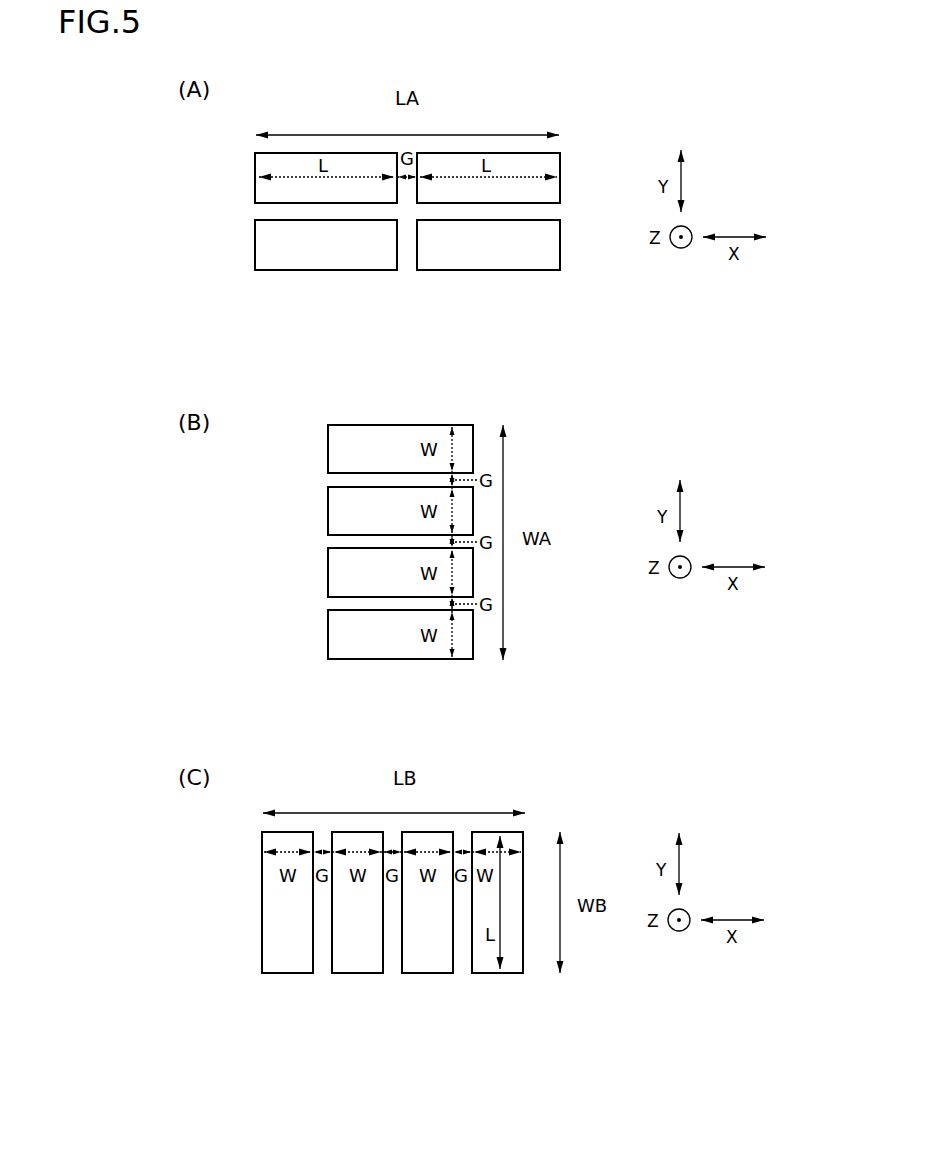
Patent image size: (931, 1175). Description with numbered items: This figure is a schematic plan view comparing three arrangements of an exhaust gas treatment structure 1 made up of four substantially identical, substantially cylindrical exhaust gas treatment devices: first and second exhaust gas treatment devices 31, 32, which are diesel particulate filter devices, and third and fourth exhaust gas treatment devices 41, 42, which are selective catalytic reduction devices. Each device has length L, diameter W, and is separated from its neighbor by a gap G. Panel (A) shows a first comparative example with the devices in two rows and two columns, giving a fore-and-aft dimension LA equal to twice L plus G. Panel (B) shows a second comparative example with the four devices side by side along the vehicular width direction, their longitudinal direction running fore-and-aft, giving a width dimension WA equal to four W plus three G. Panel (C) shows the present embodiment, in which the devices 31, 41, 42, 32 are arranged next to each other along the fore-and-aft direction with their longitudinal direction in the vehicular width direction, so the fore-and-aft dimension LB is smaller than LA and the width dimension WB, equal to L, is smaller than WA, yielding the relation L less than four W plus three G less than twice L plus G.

The exhaust gas treatment structure 1 is at (360, 935).
The first exhaust gas treatment device 31 is at (285, 962).
The second exhaust gas treatment device 32 is at (487, 962).
The third exhaust gas treatment device 41 is at (355, 962).
The fourth exhaust gas treatment device 42 is at (427, 962).